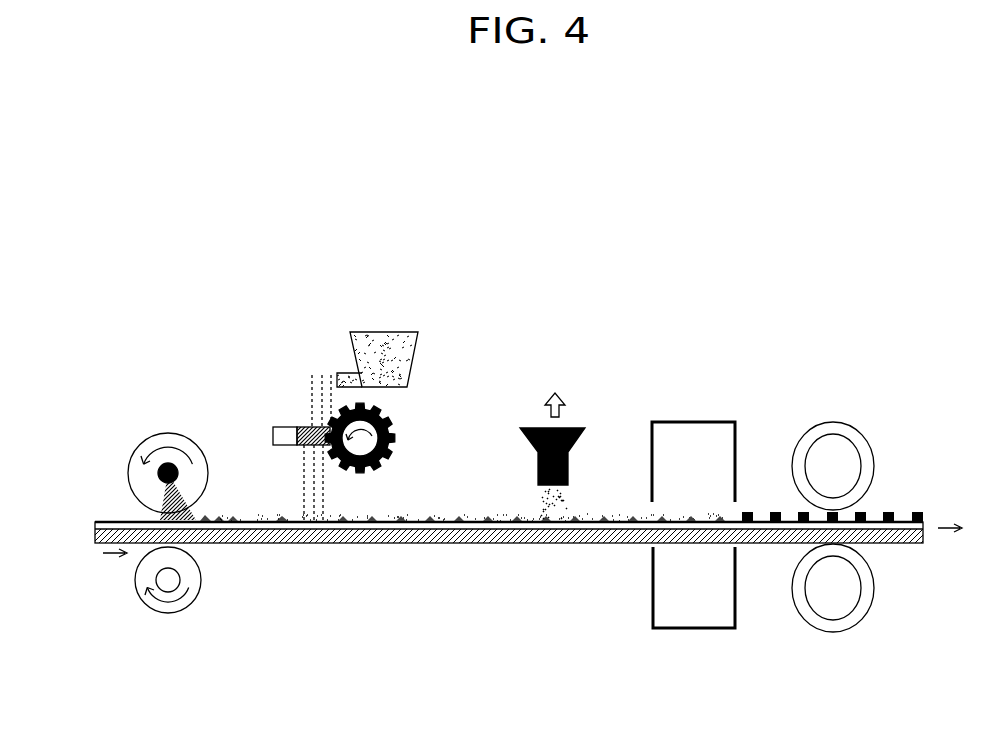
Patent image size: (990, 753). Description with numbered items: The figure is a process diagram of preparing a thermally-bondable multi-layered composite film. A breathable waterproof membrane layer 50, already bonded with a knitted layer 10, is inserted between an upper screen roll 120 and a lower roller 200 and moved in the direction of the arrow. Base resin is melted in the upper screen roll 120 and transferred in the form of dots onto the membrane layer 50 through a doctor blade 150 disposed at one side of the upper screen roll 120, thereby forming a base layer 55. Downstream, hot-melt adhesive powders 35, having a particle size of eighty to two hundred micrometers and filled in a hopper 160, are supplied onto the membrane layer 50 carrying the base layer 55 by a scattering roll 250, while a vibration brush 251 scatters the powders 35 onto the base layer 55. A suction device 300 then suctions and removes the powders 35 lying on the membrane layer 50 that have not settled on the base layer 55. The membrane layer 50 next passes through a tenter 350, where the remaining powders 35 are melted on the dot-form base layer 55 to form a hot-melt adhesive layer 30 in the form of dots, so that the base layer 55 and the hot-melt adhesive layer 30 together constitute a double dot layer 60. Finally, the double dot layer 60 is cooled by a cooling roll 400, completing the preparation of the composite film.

The knitted layer 10 is at (97, 545).
The hot-melt adhesive layer 30 is at (460, 515).
The hot-melt adhesive powders 35 is at (322, 380).
The breathable waterproof membrane layer 50 is at (113, 522).
The base layer 55 is at (282, 518).
The double dot layer 60 is at (888, 510).
The upper screen roll 120 is at (140, 433).
The doctor blade 150 is at (218, 510).
The hopper 160 is at (397, 332).
The lower roller 200 is at (167, 615).
The scattering roll 250 is at (390, 427).
The vibration brush 251 is at (290, 427).
The suction device 300 is at (575, 428).
The tenter 350 is at (683, 420).
The cooling roll 400 is at (827, 422).